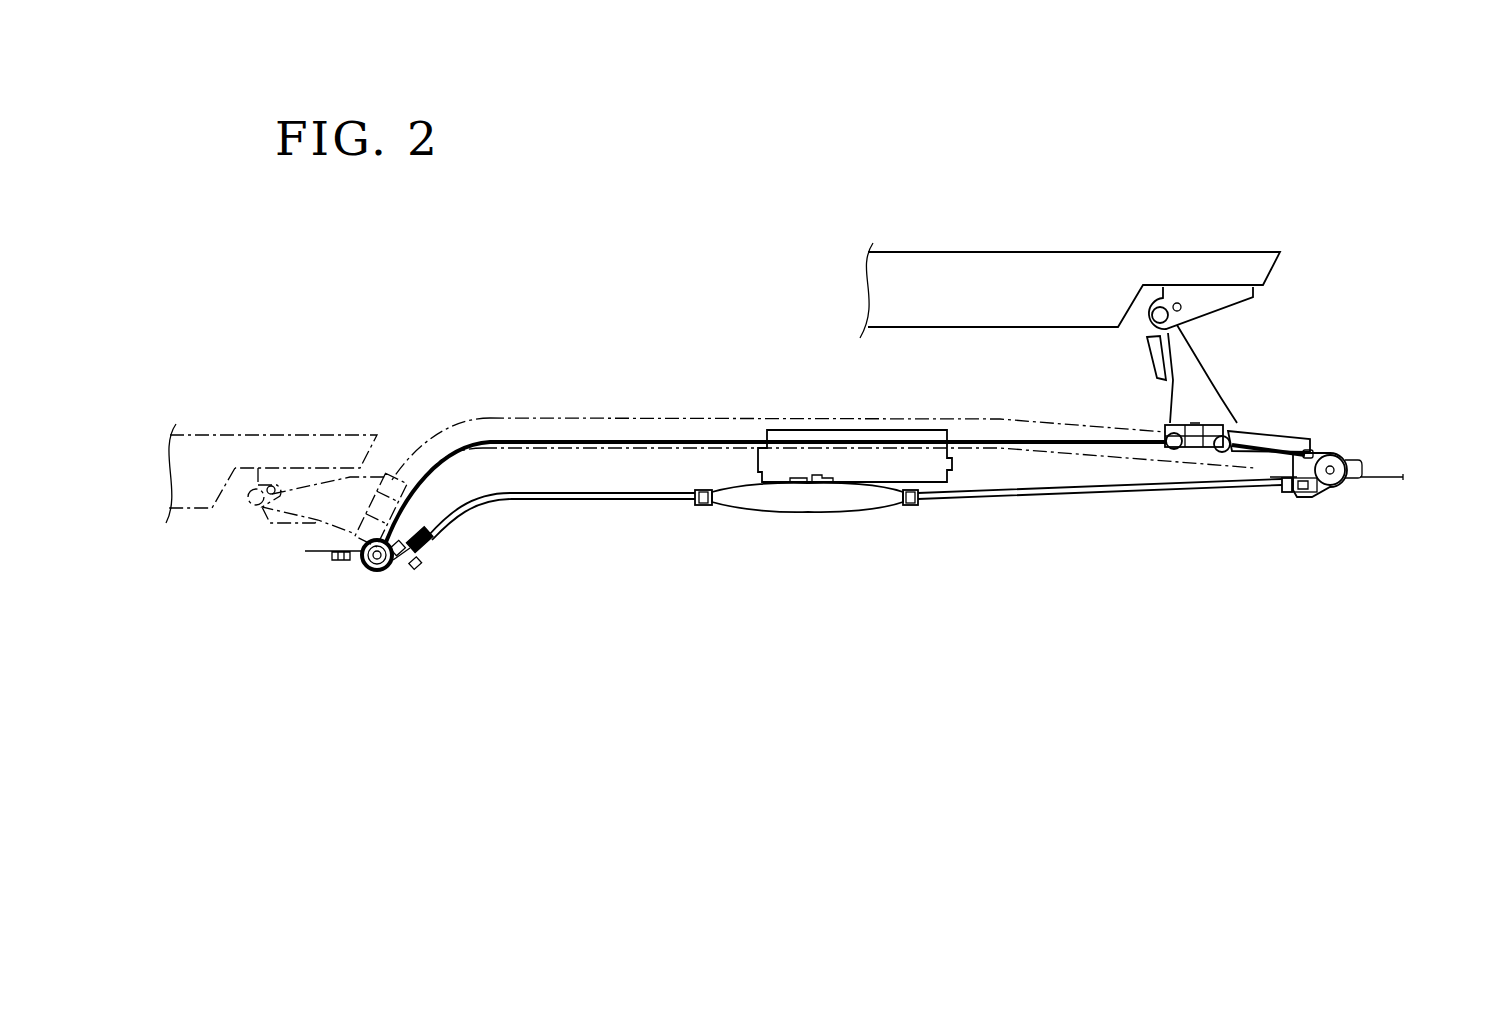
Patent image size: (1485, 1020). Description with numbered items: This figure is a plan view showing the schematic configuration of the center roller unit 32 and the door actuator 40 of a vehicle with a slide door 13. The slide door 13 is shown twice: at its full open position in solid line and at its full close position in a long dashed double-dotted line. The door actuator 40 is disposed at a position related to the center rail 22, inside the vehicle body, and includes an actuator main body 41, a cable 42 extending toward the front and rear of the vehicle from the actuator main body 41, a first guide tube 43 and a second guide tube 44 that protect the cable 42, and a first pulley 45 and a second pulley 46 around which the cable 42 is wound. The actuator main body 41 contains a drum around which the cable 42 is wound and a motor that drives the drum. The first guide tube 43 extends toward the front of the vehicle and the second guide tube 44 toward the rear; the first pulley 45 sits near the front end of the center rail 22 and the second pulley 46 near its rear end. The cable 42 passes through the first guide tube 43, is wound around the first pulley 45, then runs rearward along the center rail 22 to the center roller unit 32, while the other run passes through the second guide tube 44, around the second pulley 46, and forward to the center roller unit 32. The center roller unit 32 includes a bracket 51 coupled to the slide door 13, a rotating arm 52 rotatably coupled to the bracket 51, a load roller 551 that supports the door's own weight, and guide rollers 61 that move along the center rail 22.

The slide door 13 is at (217, 434).
The center rail 22 is at (652, 417).
The center roller unit 32 is at (249, 512).
The door actuator 40 is at (940, 537).
The actuator main body 41 is at (807, 512).
The cable 42 is at (1092, 440).
The first guide tube 43 is at (645, 507).
The second guide tube 44 is at (1007, 500).
The first pulley 45 is at (363, 571).
The second pulley 46 is at (1347, 482).
The bracket 51 is at (1153, 287).
The rotating arm 52 is at (1200, 353).
The load roller 551 is at (1200, 452).
The guide roller 61 is at (1173, 452).